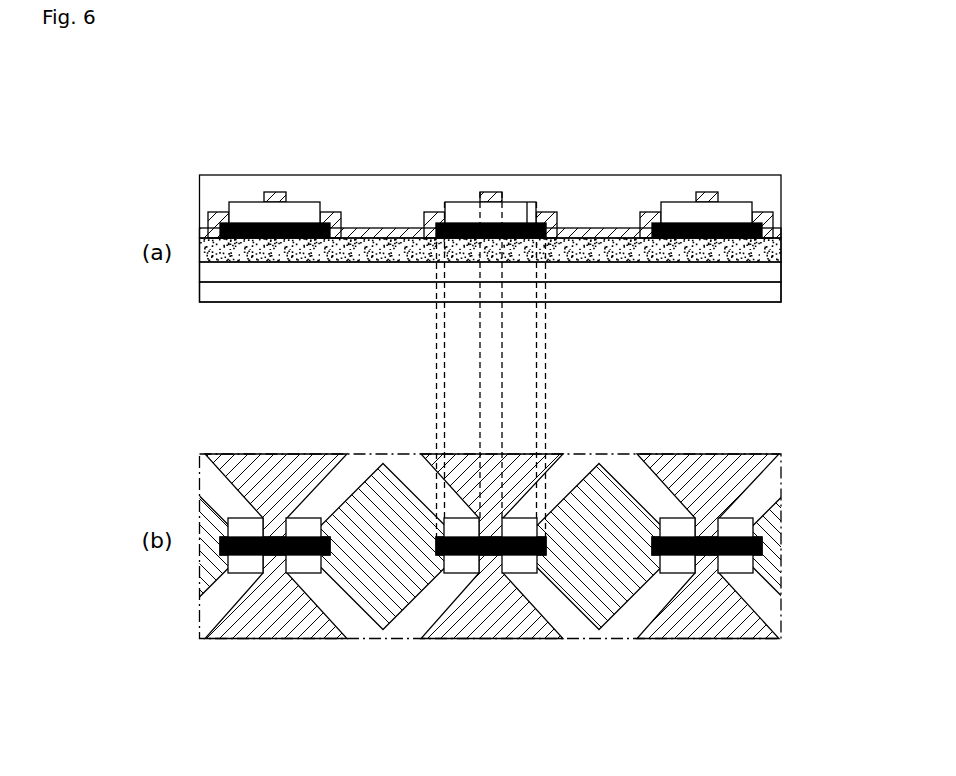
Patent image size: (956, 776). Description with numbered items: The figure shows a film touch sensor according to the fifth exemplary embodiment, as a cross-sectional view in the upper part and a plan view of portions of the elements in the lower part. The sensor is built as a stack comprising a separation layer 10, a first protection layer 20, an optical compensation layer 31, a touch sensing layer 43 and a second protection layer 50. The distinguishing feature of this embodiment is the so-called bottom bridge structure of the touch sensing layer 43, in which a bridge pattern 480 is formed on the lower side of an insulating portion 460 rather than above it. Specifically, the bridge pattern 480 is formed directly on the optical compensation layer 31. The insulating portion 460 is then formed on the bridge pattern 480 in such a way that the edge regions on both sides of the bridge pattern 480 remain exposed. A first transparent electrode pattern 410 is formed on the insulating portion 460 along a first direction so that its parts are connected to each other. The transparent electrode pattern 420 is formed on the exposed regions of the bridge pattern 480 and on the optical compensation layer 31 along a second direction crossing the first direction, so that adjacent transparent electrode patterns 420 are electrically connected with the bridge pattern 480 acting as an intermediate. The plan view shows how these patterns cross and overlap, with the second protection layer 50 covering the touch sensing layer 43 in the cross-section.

The separation layer 10 is at (775, 292).
The first protection layer 20 is at (775, 268).
The optical compensation layer 31 is at (775, 242).
The touch sensing layer 43 is at (645, 99).
The second protection layer 50 is at (775, 181).
The first transparent electrode pattern 410 is at (486, 192).
The transparent electrode pattern 420 is at (557, 216).
The insulating portion 460 is at (513, 213).
The bridge pattern 480 is at (528, 207).